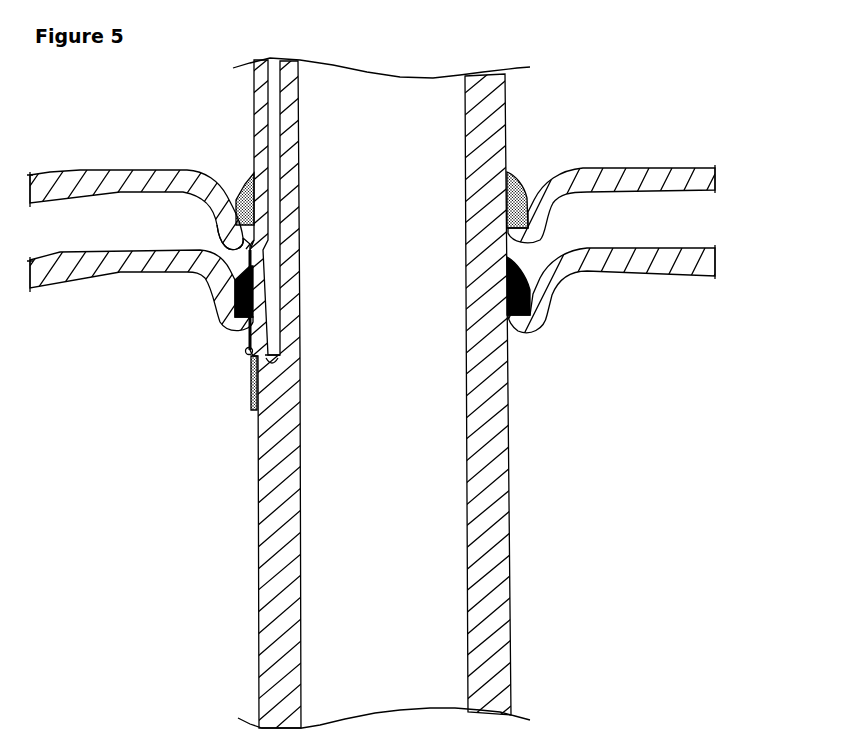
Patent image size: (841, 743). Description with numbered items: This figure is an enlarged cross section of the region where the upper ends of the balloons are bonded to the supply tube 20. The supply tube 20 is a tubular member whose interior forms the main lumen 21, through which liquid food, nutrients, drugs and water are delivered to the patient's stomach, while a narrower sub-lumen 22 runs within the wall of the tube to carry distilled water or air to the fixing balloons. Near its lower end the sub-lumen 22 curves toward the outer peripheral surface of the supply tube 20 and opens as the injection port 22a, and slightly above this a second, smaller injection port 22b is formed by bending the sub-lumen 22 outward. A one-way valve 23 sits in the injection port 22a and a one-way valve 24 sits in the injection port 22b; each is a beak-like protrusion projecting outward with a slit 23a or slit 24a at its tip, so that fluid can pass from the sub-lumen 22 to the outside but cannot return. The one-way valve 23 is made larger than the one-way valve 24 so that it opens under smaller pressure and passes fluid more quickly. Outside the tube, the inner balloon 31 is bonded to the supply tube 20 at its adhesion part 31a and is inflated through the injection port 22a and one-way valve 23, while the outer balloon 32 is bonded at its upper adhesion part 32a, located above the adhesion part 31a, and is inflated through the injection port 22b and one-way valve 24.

The supply tube 20 is at (500, 95).
The main lumen 21 is at (393, 153).
The sub-lumen 22 is at (270, 107).
The injection port 22a is at (300, 356).
The injection port 22b is at (262, 246).
The one-way valve 23 is at (250, 362).
The slit 23a is at (245, 350).
The one-way valve 24 is at (215, 286).
The slit 24a is at (238, 236).
The inner balloon 31 is at (684, 256).
The adhesion part 31a is at (532, 260).
The outer balloon 32 is at (685, 170).
The upper adhesion part 32a is at (522, 192).